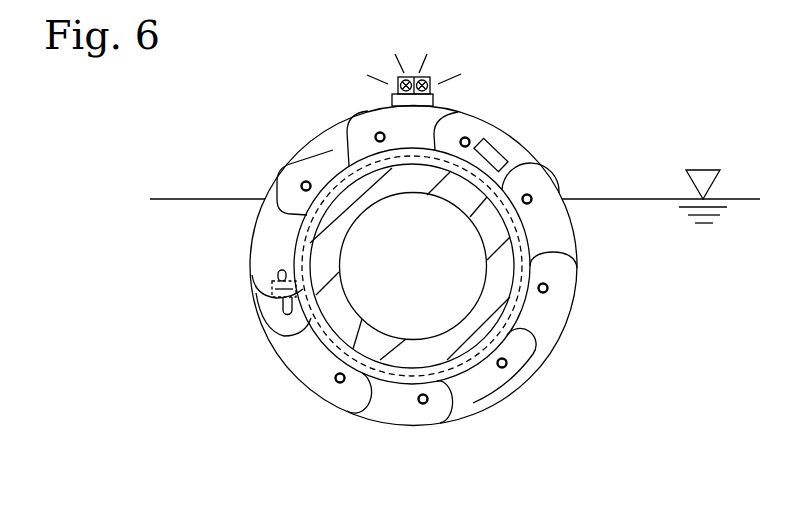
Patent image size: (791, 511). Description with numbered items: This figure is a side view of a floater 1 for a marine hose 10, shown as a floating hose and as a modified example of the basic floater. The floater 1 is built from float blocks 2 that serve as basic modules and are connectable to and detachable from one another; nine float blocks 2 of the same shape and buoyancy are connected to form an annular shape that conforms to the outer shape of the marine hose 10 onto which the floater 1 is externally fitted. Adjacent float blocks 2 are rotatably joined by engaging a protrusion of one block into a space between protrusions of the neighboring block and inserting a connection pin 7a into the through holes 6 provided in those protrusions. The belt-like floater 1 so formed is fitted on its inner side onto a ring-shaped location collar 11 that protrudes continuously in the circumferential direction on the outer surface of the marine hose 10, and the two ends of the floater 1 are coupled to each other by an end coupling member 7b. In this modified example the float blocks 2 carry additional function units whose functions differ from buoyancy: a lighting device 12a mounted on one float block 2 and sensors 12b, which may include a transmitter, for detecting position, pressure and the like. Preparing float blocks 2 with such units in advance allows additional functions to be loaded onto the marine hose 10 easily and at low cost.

The floater 1 is at (401, 258).
The float block 2 is at (545, 343).
The through hole 6 is at (338, 381).
The connection pin 7a is at (340, 384).
The end coupling member 7b is at (273, 285).
The marine hose 10 is at (341, 186).
The location collar 11 is at (300, 219).
The lighting device 12a is at (392, 96).
The sensors 12b is at (489, 97).